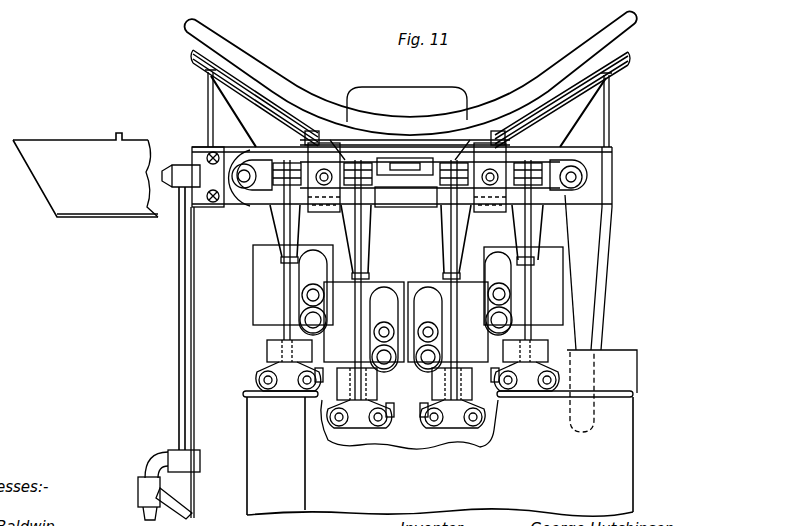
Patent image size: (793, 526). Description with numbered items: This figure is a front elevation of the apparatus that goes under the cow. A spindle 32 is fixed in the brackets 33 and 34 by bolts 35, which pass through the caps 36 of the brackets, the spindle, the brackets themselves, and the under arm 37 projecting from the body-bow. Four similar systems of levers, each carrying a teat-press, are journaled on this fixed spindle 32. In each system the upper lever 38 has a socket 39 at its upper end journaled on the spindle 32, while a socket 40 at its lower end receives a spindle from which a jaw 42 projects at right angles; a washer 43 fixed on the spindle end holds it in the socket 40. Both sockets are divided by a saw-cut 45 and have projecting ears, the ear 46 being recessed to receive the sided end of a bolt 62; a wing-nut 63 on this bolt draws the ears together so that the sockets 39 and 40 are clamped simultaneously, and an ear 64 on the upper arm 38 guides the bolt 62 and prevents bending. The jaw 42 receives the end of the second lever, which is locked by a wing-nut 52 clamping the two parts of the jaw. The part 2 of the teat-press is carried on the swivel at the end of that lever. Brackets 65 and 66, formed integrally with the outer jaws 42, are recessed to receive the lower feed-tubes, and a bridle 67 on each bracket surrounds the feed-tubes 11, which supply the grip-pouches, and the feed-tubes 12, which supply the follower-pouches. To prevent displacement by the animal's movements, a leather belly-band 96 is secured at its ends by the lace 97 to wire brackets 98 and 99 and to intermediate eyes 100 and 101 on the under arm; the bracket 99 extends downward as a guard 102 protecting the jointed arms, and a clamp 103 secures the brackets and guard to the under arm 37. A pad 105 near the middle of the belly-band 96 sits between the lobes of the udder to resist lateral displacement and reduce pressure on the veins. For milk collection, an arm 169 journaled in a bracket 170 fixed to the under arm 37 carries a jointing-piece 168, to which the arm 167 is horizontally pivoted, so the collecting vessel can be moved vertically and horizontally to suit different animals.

The part of the teat-press 2 is at (258, 257).
The feed-tubes 11 is at (326, 295).
The feed-tubes 12 is at (326, 321).
The spindle 32 is at (410, 207).
The bracket 33 is at (323, 212).
The bracket 34 is at (489, 212).
The bolts 35 is at (300, 168).
The caps 36 is at (329, 143).
The under arm 37 is at (137, 202).
The upper lever 38 is at (280, 280).
The socket 39 is at (355, 163).
The socket 40 is at (255, 367).
The jaw 42 is at (316, 374).
The washer 43 is at (262, 346).
The saw-cut 45 is at (468, 160).
The ear 46 is at (324, 168).
The wing-nut 52 is at (275, 398).
The bolt 62 is at (283, 236).
The wing-nut 63 is at (258, 386).
The ear 64 is at (256, 269).
The bracket 65 is at (302, 316).
The bracket 66 is at (513, 298).
The bridle 67 is at (302, 300).
The belly-band 96 is at (592, 62).
The lace 97 is at (401, 140).
The wire bracket 98 is at (208, 118).
The wire bracket 99 is at (611, 108).
The eye 100 is at (312, 136).
The eye 101 is at (498, 136).
The guard 102 is at (600, 269).
The clamp 103 is at (247, 443).
The pad 105 is at (376, 90).
The arm 167 is at (188, 497).
The jointing-piece 168 is at (138, 483).
The arm 169 is at (183, 299).
The bracket 170 is at (175, 162).